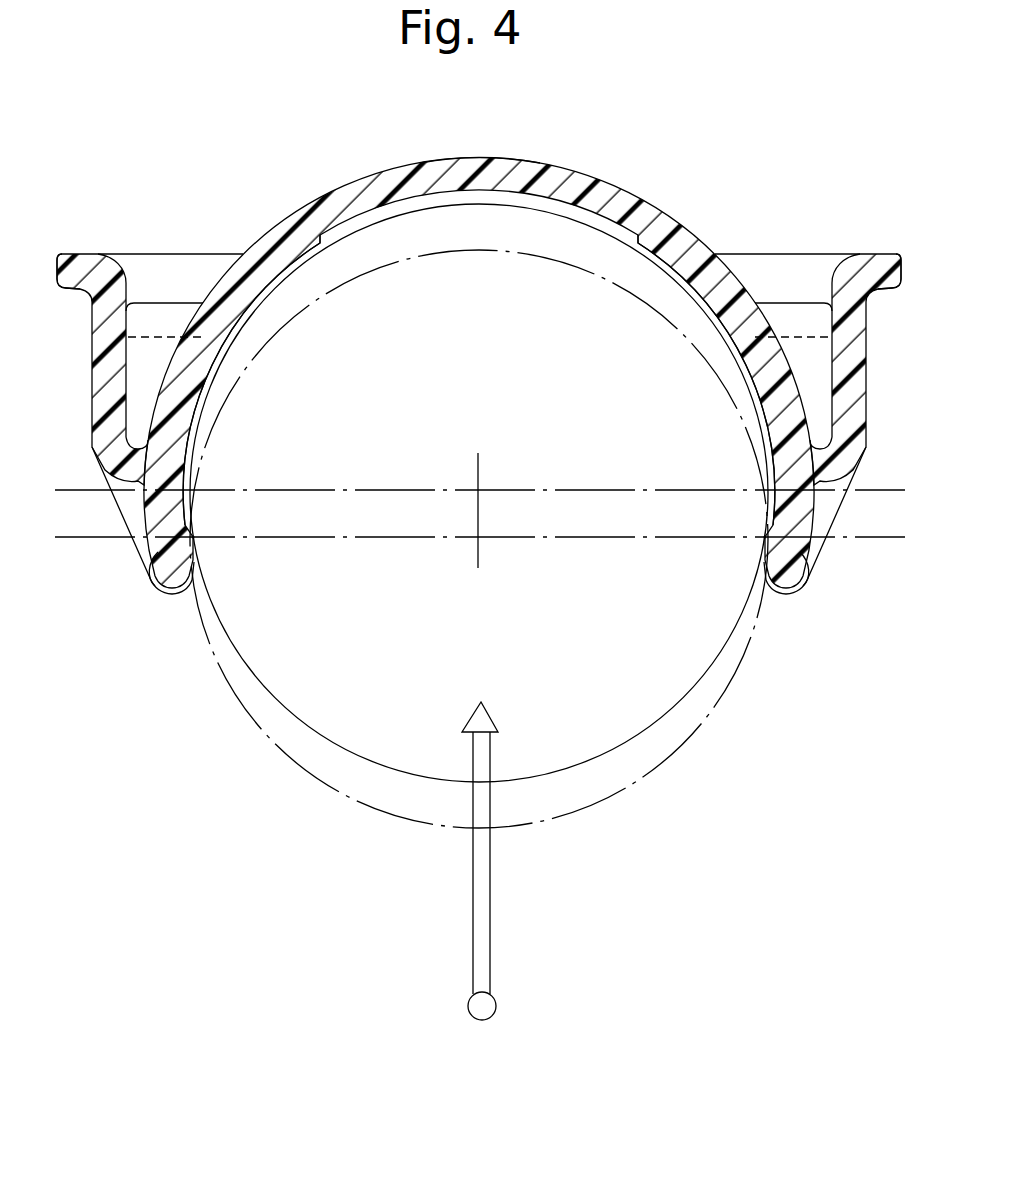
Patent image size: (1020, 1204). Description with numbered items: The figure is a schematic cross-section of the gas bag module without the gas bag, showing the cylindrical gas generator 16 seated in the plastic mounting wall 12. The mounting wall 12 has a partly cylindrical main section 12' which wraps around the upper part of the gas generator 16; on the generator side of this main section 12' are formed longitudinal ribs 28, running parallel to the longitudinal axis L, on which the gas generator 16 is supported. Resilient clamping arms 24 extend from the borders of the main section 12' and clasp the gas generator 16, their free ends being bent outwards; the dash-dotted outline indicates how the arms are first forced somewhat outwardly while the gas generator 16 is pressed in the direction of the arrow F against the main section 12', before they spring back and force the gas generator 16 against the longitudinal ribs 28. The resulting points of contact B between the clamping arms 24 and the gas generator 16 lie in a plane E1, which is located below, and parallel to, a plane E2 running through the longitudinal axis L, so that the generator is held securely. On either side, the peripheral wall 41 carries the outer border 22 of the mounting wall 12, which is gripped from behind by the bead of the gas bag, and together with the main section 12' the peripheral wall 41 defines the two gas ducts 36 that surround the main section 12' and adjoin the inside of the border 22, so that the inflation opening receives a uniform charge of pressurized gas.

The mounting wall 12 is at (479, 360).
The main section 12' is at (480, 130).
The gas generator 16 is at (298, 726).
The outer border 22 is at (77, 270).
The resilient clamping arms 24 is at (158, 592).
The longitudinal ribs 28 is at (288, 260).
The gas ducts 36 is at (178, 278).
The peripheral wall 41 is at (100, 375).
The points of contact B is at (198, 540).
The plane E1 is at (352, 540).
The plane E2 is at (358, 487).
The longitudinal axis L is at (480, 490).
The arrow F is at (492, 905).